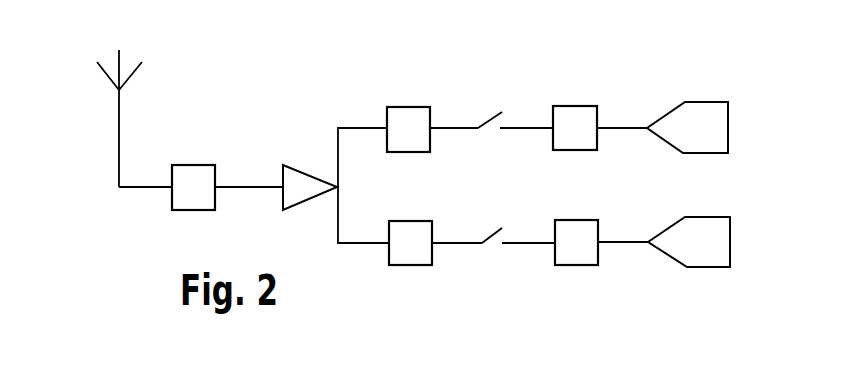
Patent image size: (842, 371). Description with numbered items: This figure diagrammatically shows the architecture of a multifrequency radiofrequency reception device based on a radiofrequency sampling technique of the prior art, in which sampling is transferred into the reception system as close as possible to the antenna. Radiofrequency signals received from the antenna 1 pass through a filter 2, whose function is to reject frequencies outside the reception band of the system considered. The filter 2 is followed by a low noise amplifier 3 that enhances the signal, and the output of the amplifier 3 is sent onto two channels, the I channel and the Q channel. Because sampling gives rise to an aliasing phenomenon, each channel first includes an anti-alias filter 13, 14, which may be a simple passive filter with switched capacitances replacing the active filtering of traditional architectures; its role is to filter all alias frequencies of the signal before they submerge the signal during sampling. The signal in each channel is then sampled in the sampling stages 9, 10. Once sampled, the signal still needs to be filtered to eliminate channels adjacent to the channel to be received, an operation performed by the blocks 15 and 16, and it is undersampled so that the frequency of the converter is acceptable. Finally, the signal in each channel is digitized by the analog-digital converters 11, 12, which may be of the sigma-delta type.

The antenna 1 is at (119, 137).
The filter 2 is at (185, 165).
The low noise amplifier 3 is at (300, 165).
The sampling 9 is at (493, 118).
The sampling 10 is at (492, 243).
The analog-digital converter 11 is at (705, 102).
The analog-digital converter 12 is at (708, 267).
The anti-alias filter 13 is at (407, 107).
The anti-alias filter 14 is at (408, 265).
The block 15 is at (573, 106).
The block 16 is at (576, 265).